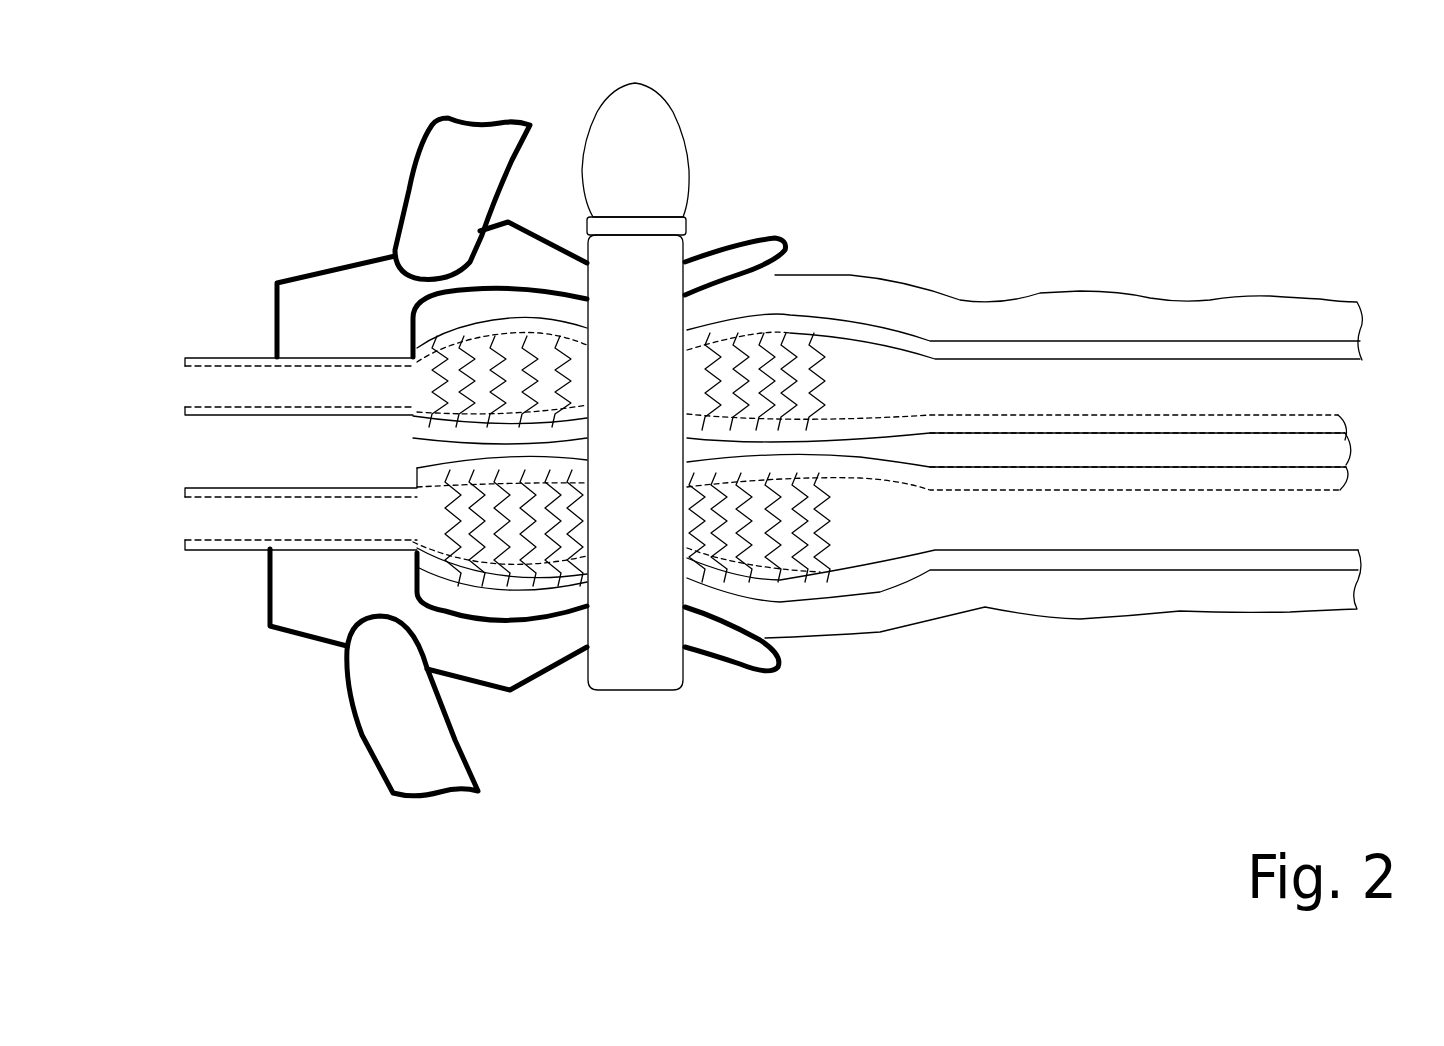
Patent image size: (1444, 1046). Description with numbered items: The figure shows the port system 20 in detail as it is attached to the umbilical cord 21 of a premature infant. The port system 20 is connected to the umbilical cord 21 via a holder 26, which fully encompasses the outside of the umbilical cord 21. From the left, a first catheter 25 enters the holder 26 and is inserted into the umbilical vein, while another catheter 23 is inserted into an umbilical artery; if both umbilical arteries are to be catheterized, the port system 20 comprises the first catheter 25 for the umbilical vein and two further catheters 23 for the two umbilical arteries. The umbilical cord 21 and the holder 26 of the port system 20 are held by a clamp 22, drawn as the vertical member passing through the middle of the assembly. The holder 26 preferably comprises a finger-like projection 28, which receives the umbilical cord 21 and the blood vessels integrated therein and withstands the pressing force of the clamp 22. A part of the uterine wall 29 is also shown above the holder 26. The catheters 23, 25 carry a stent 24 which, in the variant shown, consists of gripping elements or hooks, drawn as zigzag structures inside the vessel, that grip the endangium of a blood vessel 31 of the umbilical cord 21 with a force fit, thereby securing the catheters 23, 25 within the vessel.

The port system 20 is at (287, 138).
The umbilical cord 21 is at (1197, 291).
The clamp 22 is at (712, 152).
The catheter 23 is at (218, 363).
The stent 24 is at (823, 535).
The first catheter 25 is at (222, 490).
The holder 26 is at (364, 328).
The finger-like projection 28 is at (730, 640).
The uterine wall 29 is at (463, 150).
The blood vessel 31 is at (1335, 487).